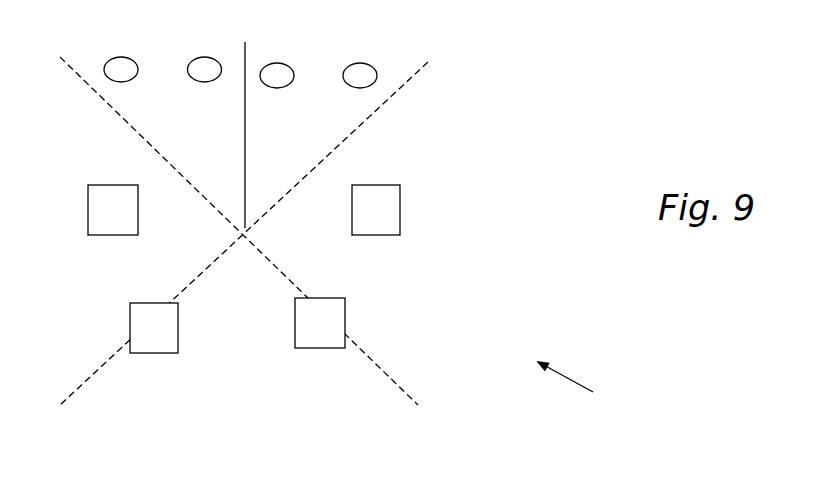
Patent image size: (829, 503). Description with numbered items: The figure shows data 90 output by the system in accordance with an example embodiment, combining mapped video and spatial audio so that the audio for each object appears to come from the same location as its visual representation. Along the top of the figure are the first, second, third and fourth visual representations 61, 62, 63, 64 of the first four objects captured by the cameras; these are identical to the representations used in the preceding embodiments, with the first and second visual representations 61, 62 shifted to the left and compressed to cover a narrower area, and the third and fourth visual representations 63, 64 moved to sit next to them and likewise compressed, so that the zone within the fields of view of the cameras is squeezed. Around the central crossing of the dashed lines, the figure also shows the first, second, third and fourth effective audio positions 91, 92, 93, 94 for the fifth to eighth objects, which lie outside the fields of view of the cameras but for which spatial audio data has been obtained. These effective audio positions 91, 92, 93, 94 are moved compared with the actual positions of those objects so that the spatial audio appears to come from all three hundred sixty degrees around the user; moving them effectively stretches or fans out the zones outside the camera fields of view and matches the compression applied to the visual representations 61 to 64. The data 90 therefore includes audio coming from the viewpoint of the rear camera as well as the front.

The first visual representation 61 is at (127, 57).
The second visual representation 62 is at (208, 58).
The third visual representation 63 is at (287, 62).
The fourth visual representation 64 is at (371, 63).
The data 90 is at (581, 391).
The first effective audio position 91 is at (87, 220).
The second effective audio position 92 is at (180, 340).
The third effective audio position 93 is at (400, 208).
The fourth effective audio position 94 is at (345, 313).